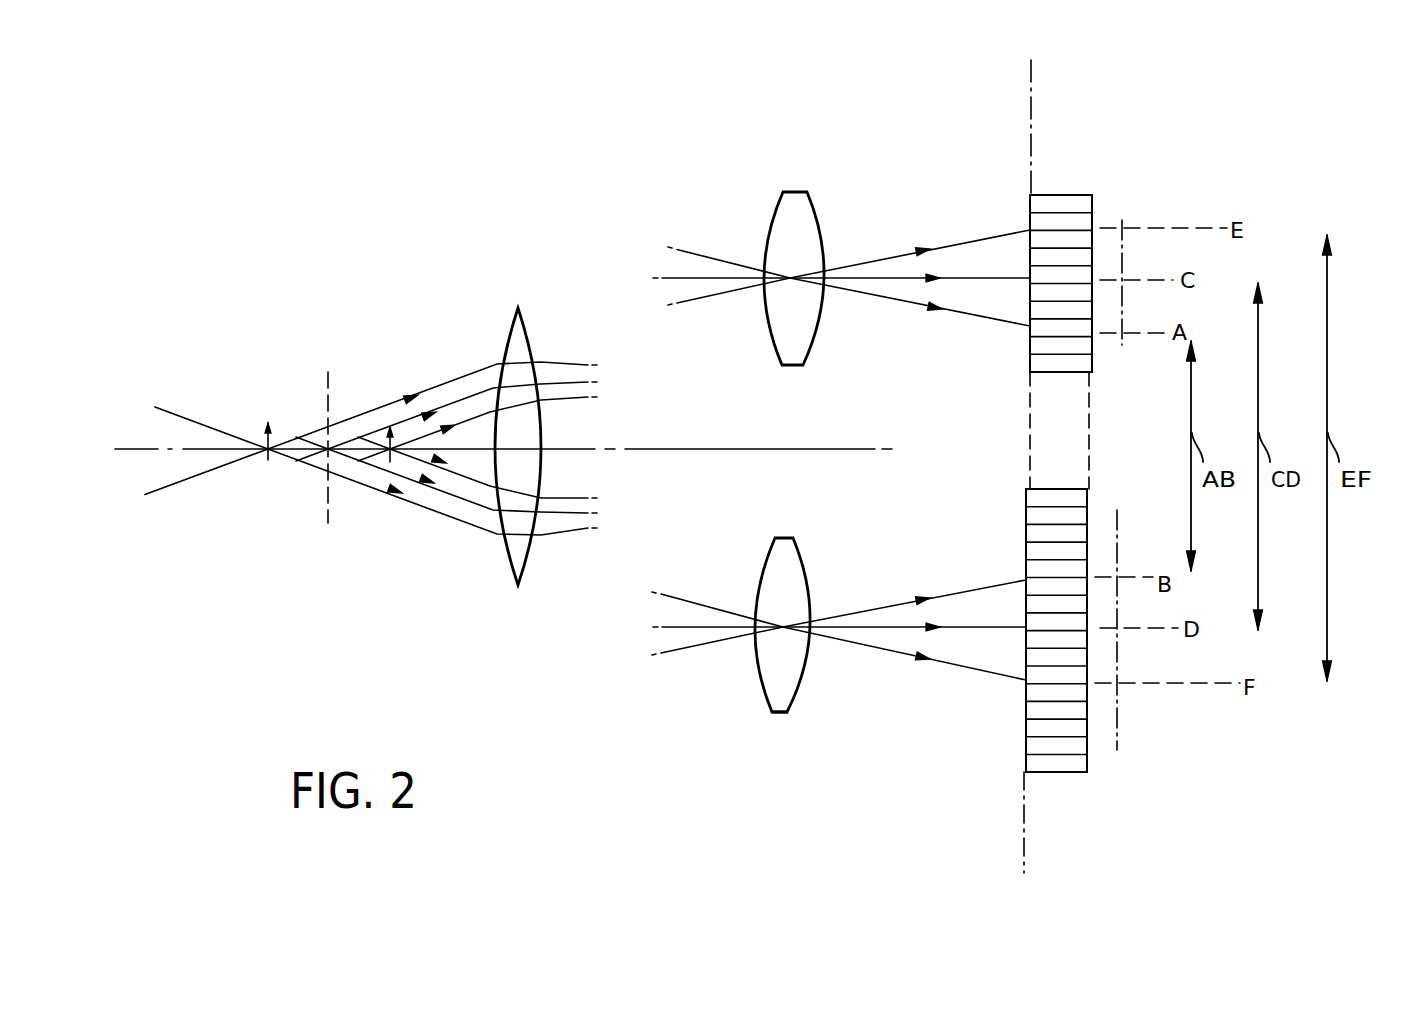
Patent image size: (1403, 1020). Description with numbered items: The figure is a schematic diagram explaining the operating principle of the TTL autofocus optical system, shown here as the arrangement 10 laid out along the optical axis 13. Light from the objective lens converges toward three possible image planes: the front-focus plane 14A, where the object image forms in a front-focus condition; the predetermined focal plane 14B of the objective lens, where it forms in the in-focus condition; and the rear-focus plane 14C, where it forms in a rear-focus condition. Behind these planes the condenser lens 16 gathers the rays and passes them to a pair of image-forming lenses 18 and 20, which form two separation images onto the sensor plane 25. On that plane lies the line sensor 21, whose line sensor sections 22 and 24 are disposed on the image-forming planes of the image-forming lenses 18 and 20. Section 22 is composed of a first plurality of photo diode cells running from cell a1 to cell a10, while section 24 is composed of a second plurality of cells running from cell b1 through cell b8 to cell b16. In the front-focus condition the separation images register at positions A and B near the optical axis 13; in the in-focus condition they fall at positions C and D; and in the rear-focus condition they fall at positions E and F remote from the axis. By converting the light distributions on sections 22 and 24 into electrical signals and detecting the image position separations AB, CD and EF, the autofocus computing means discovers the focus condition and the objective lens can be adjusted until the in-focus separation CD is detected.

The focus detecting optical system 10 is at (782, 714).
The optical axis 13 is at (125, 451).
The front-focus plane 14A is at (268, 460).
The predetermined focal plane 14B is at (328, 523).
The rear-focus plane 14C is at (390, 462).
The condenser lens 16 is at (522, 577).
The image-forming lens 18 is at (808, 192).
The image-forming lens 20 is at (803, 558).
The line sensor 21 is at (1173, 765).
The line sensor section 22 is at (1077, 193).
The line sensor section 24 is at (1062, 488).
The sensor plane 25 is at (1025, 853).
The photo diode cell a1 is at (1092, 207).
The photo diode cell a10 is at (1083, 363).
The photo diode cell b1 is at (1083, 500).
The photo diode cell b8 is at (1077, 622).
The photo diode cell b16 is at (1073, 762).